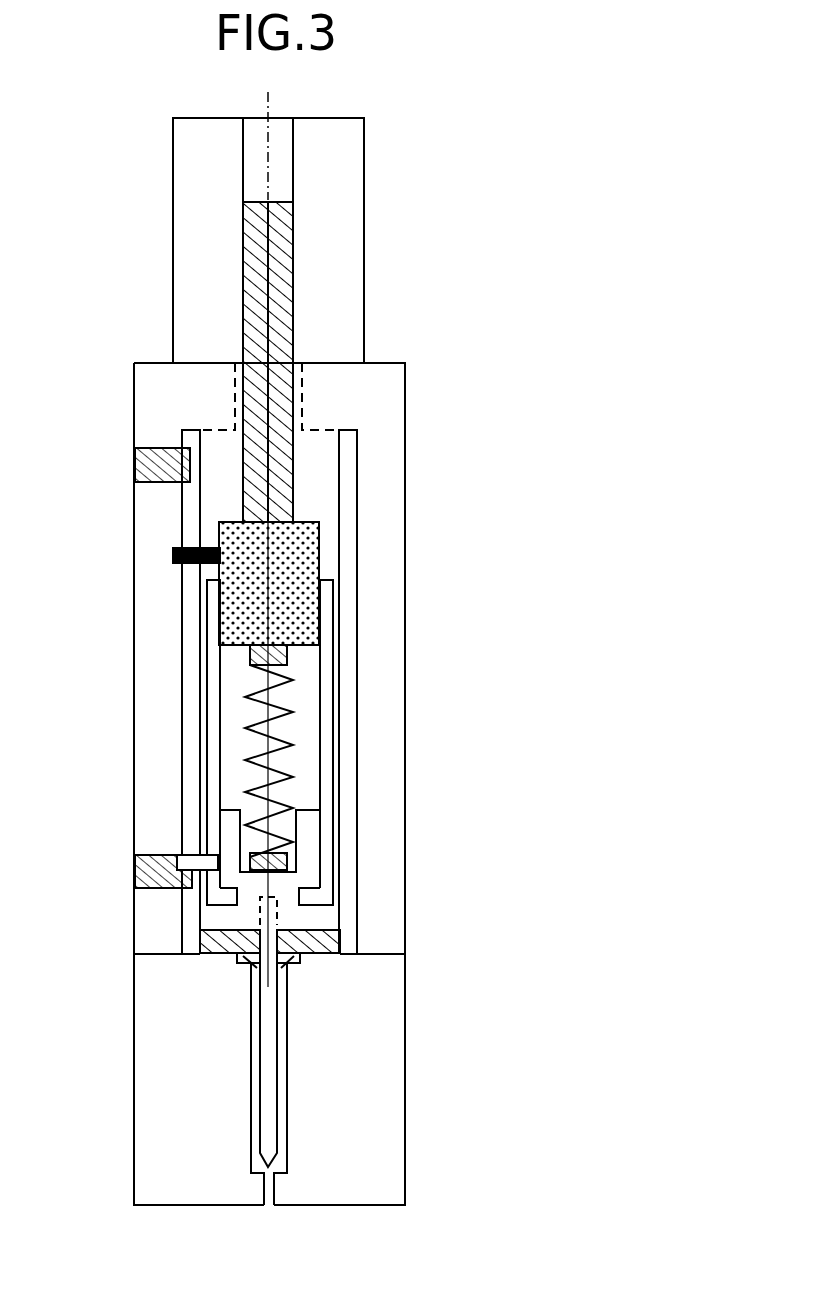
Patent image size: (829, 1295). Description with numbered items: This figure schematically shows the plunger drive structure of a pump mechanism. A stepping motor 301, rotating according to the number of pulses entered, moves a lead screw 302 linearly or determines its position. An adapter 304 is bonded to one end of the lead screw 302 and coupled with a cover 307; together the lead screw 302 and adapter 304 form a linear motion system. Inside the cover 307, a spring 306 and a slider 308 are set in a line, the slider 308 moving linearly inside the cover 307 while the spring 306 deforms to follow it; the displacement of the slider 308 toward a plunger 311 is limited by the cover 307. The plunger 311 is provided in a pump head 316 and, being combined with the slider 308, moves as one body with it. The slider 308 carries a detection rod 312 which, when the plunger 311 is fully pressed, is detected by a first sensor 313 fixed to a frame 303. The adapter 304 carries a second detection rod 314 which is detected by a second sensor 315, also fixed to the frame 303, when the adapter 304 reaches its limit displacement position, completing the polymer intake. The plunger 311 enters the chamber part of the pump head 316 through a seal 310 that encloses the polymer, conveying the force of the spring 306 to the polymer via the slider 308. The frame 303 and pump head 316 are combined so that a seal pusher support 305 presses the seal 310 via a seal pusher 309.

The stepping motor 301 is at (343, 238).
The lead screw 302 is at (295, 325).
The frame 303 is at (388, 412).
The adapter 304 is at (303, 540).
The seal pusher support 305 is at (348, 610).
The spring 306 is at (296, 698).
The cover 307 is at (328, 823).
The slider 308 is at (310, 880).
The seal pusher 309 is at (333, 933).
The seal 310 is at (300, 958).
The plunger 311 is at (268, 1092).
The detection rod 312 is at (193, 862).
The first sensor 313 is at (135, 868).
The second detection rod 314 is at (173, 555).
The second sensor 315 is at (135, 462).
The pump head 316 is at (152, 1103).